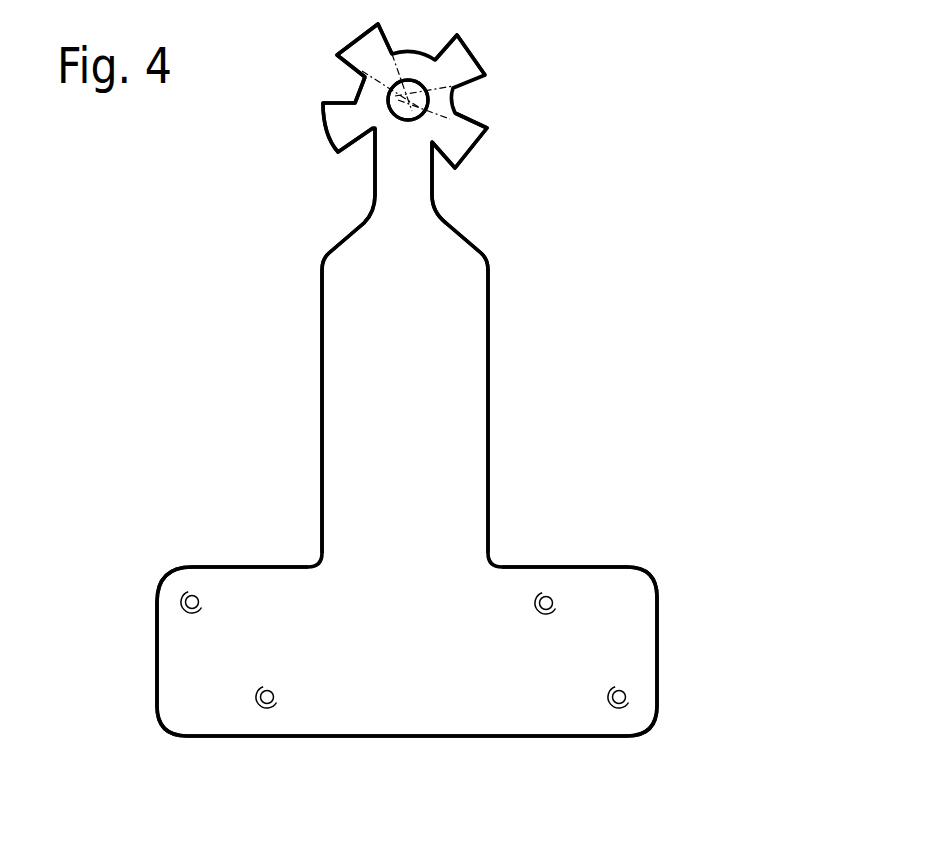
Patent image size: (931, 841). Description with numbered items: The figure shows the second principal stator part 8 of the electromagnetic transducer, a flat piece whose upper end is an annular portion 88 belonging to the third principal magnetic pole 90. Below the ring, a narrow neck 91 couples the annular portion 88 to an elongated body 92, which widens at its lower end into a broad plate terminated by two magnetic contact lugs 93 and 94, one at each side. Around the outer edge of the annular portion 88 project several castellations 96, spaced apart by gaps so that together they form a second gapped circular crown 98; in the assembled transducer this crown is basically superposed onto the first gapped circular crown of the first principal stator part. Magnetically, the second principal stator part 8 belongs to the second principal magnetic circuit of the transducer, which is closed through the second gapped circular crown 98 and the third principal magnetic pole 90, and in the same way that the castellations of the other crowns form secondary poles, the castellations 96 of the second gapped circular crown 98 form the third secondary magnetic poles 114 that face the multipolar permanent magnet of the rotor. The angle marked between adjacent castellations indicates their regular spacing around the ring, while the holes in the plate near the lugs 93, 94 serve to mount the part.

The second principal stator part 8 is at (388, 578).
The annular portion 88 is at (358, 87).
The third principal magnetic pole 90 is at (403, 228).
The neck 91 is at (410, 155).
The body 92 is at (442, 345).
The magnetic contact lug 93 is at (210, 665).
The magnetic contact lug 94 is at (597, 645).
The castellations 96 is at (457, 60).
The second gapped circular crown 98 is at (498, 77).
The third secondary magnetic poles 114 is at (460, 138).